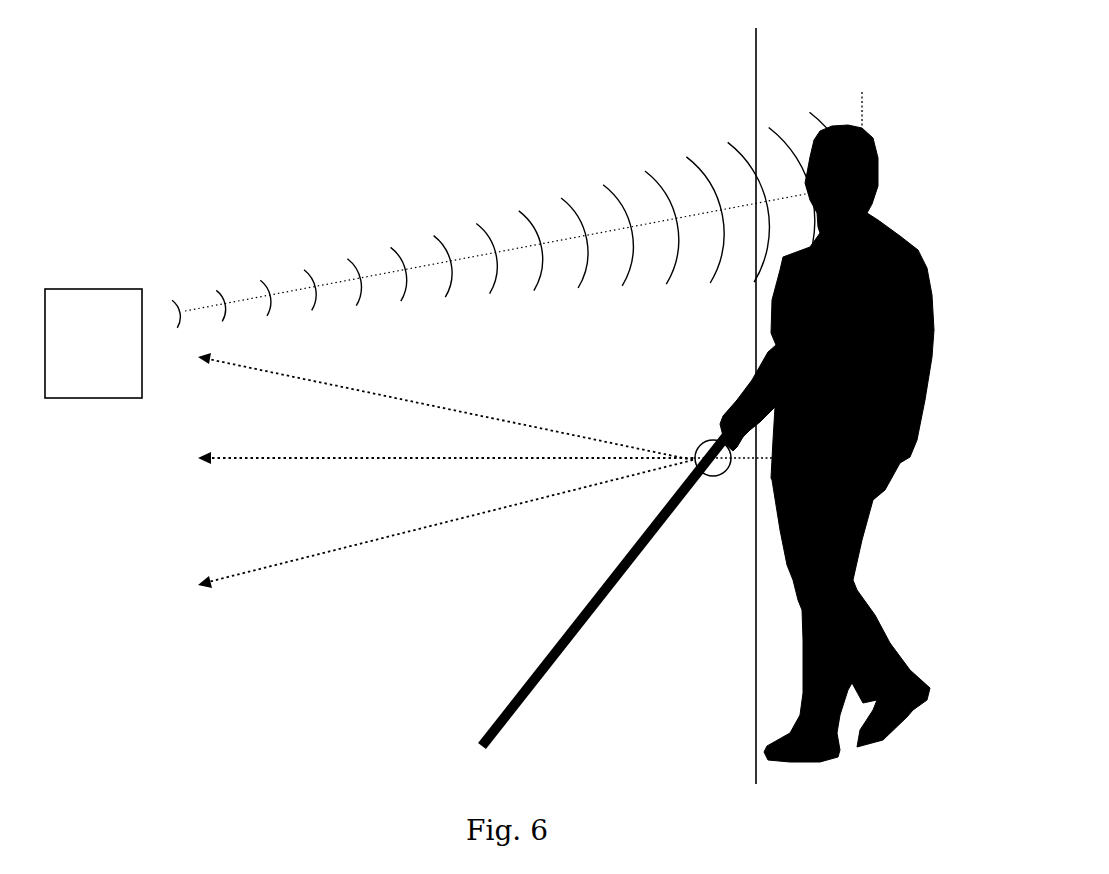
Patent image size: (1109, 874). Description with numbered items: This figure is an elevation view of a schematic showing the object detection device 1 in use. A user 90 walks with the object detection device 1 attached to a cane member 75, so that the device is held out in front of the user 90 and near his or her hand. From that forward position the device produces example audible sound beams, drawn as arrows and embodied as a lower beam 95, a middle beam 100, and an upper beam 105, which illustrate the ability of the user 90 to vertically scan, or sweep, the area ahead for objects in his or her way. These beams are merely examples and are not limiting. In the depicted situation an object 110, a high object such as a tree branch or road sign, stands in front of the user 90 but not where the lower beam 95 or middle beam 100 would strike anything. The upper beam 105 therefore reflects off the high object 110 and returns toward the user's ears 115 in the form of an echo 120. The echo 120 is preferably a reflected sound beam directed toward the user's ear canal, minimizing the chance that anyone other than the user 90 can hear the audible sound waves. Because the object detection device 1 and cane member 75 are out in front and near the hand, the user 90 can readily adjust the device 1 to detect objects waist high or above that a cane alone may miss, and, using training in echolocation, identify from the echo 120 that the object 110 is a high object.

The object detection device 1 is at (699, 429).
The cane member 75 is at (636, 578).
The user 90 is at (914, 226).
The lower beam 95 is at (297, 563).
The middle beam 100 is at (258, 460).
The upper beam 105 is at (343, 385).
The object 110 is at (93, 288).
The user's ears 115 is at (872, 145).
The echo 120 is at (433, 236).